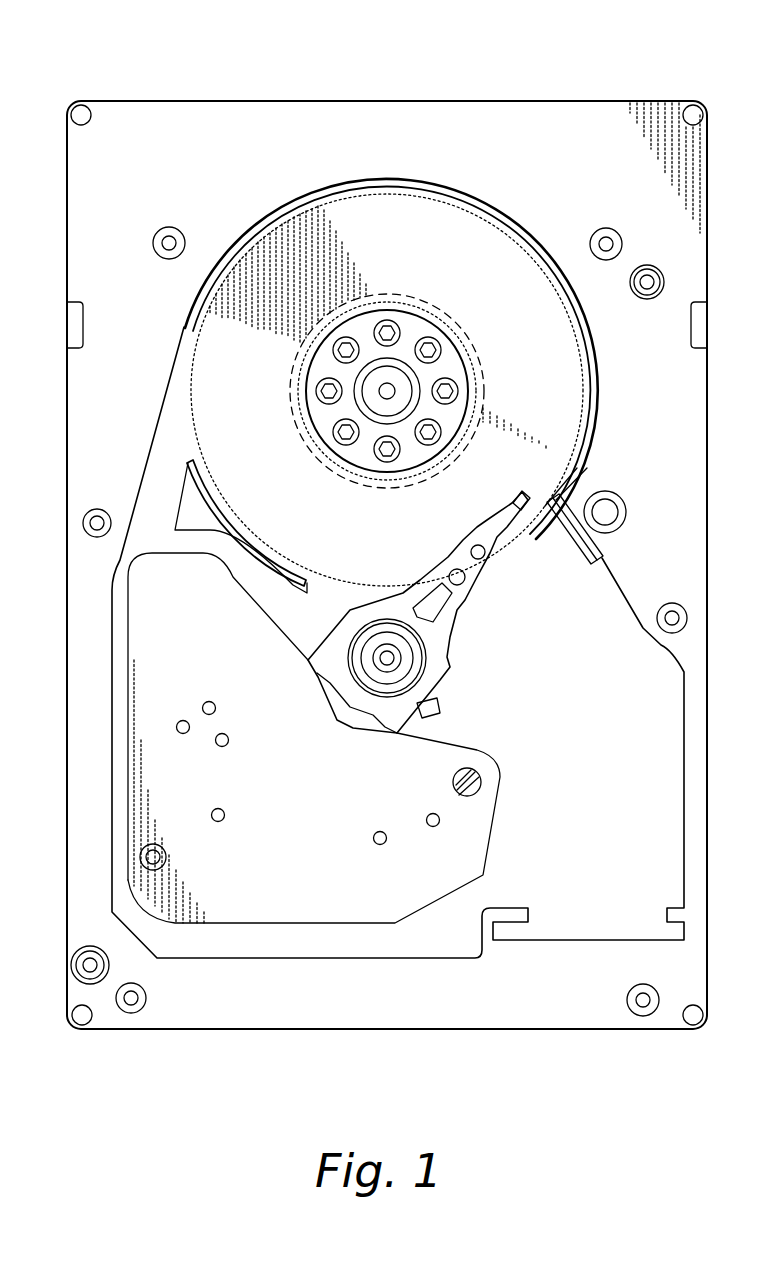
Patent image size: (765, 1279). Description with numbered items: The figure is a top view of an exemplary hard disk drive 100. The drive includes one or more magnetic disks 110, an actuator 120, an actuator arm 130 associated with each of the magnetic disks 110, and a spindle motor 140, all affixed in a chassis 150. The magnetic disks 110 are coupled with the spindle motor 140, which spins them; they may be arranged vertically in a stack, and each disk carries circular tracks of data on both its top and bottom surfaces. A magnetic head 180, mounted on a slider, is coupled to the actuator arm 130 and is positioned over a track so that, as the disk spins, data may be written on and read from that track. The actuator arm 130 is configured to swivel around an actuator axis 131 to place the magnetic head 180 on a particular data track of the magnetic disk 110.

The hard disk drive 100 is at (615, 33).
The magnetic disk 110 is at (470, 232).
The actuator 120 is at (480, 835).
The actuator arm 130 is at (465, 560).
The actuator axis 131 is at (392, 661).
The spindle motor 140 is at (400, 390).
The chassis 150 is at (177, 100).
The magnetic head 180 is at (519, 493).